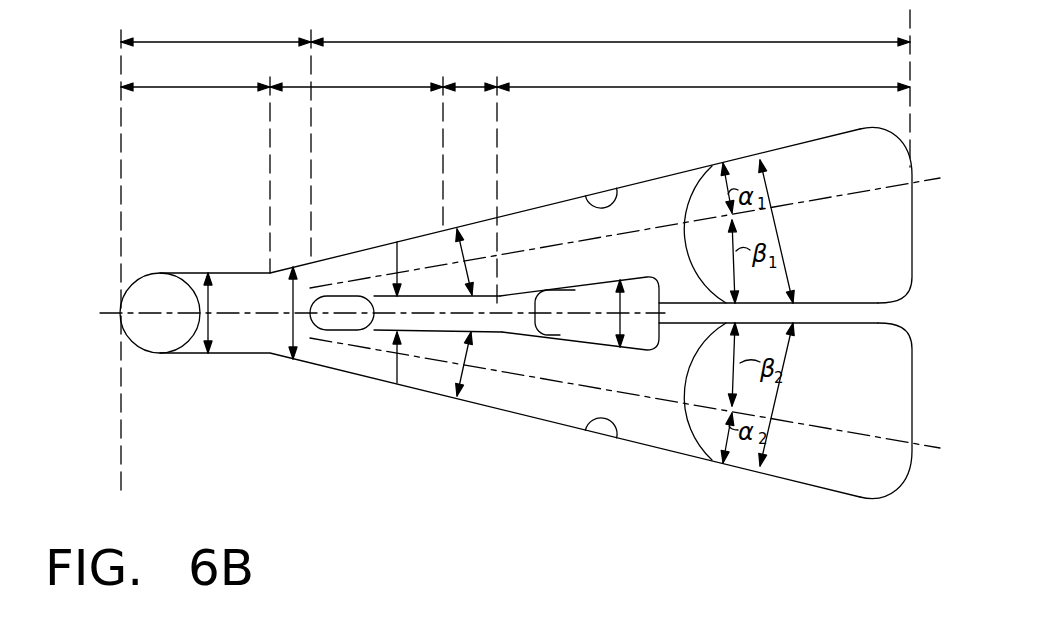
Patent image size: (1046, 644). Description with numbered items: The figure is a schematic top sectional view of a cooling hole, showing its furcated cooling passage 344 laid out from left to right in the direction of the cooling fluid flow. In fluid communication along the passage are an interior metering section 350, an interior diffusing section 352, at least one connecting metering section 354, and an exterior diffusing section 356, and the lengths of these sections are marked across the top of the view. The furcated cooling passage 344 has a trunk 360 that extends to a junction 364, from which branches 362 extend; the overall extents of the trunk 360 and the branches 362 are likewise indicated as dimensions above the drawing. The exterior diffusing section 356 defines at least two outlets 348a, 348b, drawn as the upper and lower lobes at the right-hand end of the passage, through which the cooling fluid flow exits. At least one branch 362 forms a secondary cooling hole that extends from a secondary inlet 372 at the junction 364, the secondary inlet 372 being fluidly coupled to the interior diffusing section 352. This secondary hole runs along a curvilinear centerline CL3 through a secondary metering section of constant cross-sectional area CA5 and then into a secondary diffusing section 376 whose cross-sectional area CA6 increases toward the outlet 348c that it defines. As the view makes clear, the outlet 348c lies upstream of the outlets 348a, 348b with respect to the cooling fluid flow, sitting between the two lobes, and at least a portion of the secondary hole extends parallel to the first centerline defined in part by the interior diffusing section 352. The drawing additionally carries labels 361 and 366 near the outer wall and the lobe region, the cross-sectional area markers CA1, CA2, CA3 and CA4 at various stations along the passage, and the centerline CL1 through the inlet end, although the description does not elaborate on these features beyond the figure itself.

The furcated cooling passage 344 is at (272, 342).
The outlet 348a is at (868, 160).
The outlet 348b is at (853, 460).
The outlet 348c is at (600, 336).
The interior metering section 350 is at (180, 87).
The interior diffusing section 352 is at (332, 87).
The connecting metering section 354 is at (470, 87).
The exterior diffusing section 356 is at (670, 87).
The trunk 360 is at (233, 42).
The semicircular notch 361 is at (618, 192).
The branch 362 is at (670, 42).
The junction 364 is at (346, 331).
The outlet channel 366 is at (813, 303).
The secondary inlet 372 is at (335, 331).
The secondary diffusing section 376 is at (512, 292).
The cross-sectional area 1 CA1 is at (212, 305).
The cross-sectional area 2 CA2 is at (290, 300).
The cross-sectional area 3 CA3 is at (462, 260).
The cross-sectional area 4 CA4 is at (781, 238).
The cross-sectional area CA5 is at (390, 256).
The cross-sectional area CA6 is at (618, 302).
The centerline 1 CL1 is at (245, 315).
The curvilinear centerline CL3 is at (578, 315).